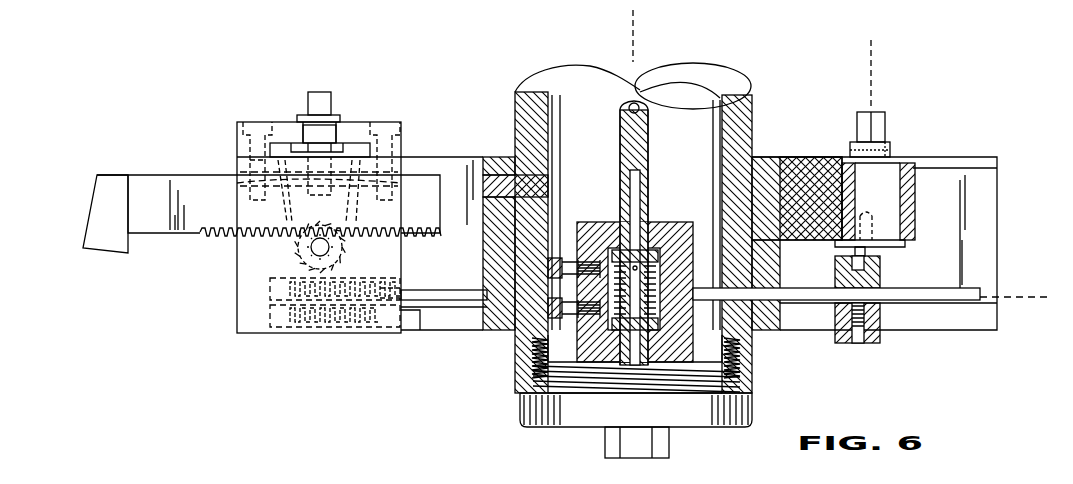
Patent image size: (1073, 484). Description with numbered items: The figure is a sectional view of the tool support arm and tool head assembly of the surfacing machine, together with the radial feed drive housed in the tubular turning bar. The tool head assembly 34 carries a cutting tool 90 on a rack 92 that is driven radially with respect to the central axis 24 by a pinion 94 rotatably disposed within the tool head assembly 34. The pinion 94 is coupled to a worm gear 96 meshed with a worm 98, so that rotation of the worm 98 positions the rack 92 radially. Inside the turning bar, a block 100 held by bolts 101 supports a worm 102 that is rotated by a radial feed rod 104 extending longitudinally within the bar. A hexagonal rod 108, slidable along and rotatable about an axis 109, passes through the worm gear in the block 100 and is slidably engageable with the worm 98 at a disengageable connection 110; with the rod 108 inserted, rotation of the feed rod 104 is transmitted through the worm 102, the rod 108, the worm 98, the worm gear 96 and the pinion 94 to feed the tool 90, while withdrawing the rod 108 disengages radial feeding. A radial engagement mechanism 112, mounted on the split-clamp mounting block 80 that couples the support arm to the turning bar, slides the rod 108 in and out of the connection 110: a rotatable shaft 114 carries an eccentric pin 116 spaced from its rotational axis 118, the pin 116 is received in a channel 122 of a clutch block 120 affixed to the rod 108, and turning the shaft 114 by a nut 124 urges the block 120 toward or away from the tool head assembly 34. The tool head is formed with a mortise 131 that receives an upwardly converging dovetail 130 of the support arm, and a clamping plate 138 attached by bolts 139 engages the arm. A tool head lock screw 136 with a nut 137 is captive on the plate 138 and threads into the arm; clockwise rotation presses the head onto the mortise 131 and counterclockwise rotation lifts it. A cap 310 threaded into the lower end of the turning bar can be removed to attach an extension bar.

The central axis 24 is at (640, 40).
The tool head assembly 34 is at (170, 122).
The split-clamp mounting block 80 is at (505, 157).
The cutting tool 90 is at (90, 212).
The rack 92 is at (206, 234).
The pinion 94 is at (292, 253).
The worm gear 96 is at (292, 262).
The worm 98 is at (302, 330).
The block 100 is at (612, 225).
The bolts 101 is at (567, 262).
The worm 102 is at (677, 250).
The radial feed rod 104 is at (618, 143).
The hexagonal rod 108 is at (437, 318).
The axis 109 is at (1043, 297).
The disengageable connection 110 is at (410, 310).
The radial engagement mechanism 112 is at (915, 335).
The rotatable shaft 114 is at (890, 152).
The eccentric pin 116 is at (852, 250).
The rotational axis 118 is at (872, 78).
The clutch block 120 is at (852, 343).
The channel 122 is at (880, 270).
The nut 124 is at (856, 128).
The dovetail 130 is at (270, 190).
The mortise 131 is at (262, 172).
The tool head lock screw 136 is at (337, 133).
The nut 137 is at (318, 92).
The clamping plate 138 is at (282, 120).
The bolts 139 is at (256, 125).
The cap 310 is at (580, 418).